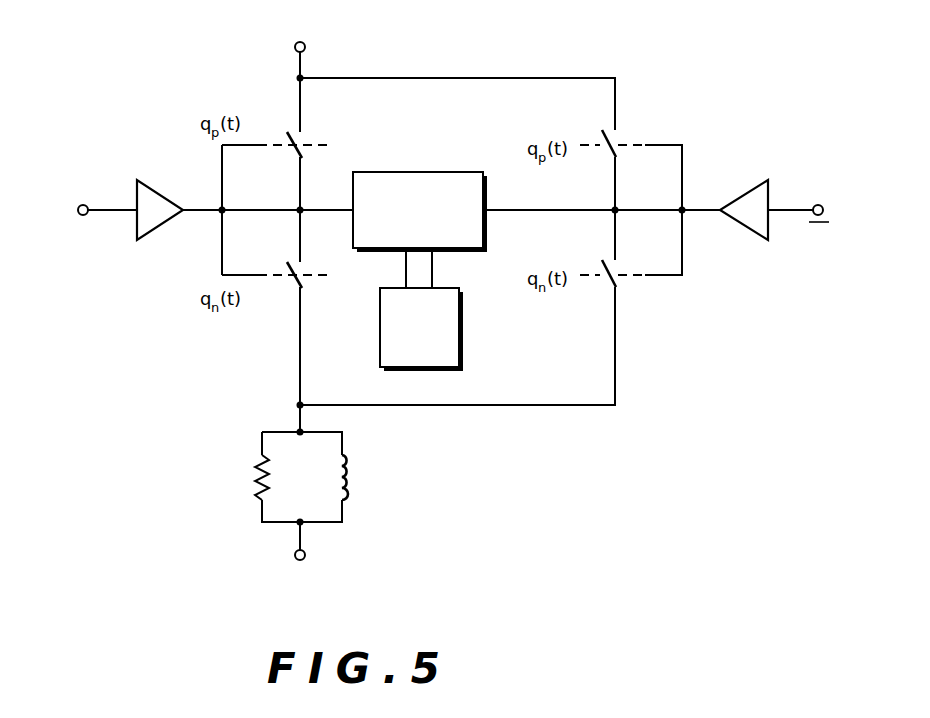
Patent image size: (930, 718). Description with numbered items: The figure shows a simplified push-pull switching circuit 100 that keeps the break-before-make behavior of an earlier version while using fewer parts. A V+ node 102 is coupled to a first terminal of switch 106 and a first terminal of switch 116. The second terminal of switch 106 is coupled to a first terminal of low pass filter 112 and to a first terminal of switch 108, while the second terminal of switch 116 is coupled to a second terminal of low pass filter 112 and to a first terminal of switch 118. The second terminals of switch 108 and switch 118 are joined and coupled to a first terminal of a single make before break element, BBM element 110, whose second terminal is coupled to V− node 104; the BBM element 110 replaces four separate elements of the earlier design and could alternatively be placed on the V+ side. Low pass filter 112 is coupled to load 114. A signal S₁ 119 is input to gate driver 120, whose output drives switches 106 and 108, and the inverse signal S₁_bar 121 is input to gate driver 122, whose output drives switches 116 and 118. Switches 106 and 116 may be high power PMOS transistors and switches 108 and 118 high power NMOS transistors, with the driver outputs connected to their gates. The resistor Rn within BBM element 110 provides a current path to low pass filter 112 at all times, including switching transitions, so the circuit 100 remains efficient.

The push-pull switching circuit 100 is at (710, 47).
The V+ node 102 is at (296, 49).
The V− node 104 is at (295, 557).
The switch 106 is at (292, 165).
The switch 108 is at (292, 295).
The BBM element 110 is at (218, 442).
The low pass filter 112 is at (388, 172).
The load 114 is at (462, 341).
The switch 116 is at (606, 163).
The switch 118 is at (606, 293).
The signal S₁ 119 is at (81, 204).
The gate driver 120 is at (162, 193).
The signal S₁_bar 121 is at (823, 204).
The gate driver 122 is at (748, 192).